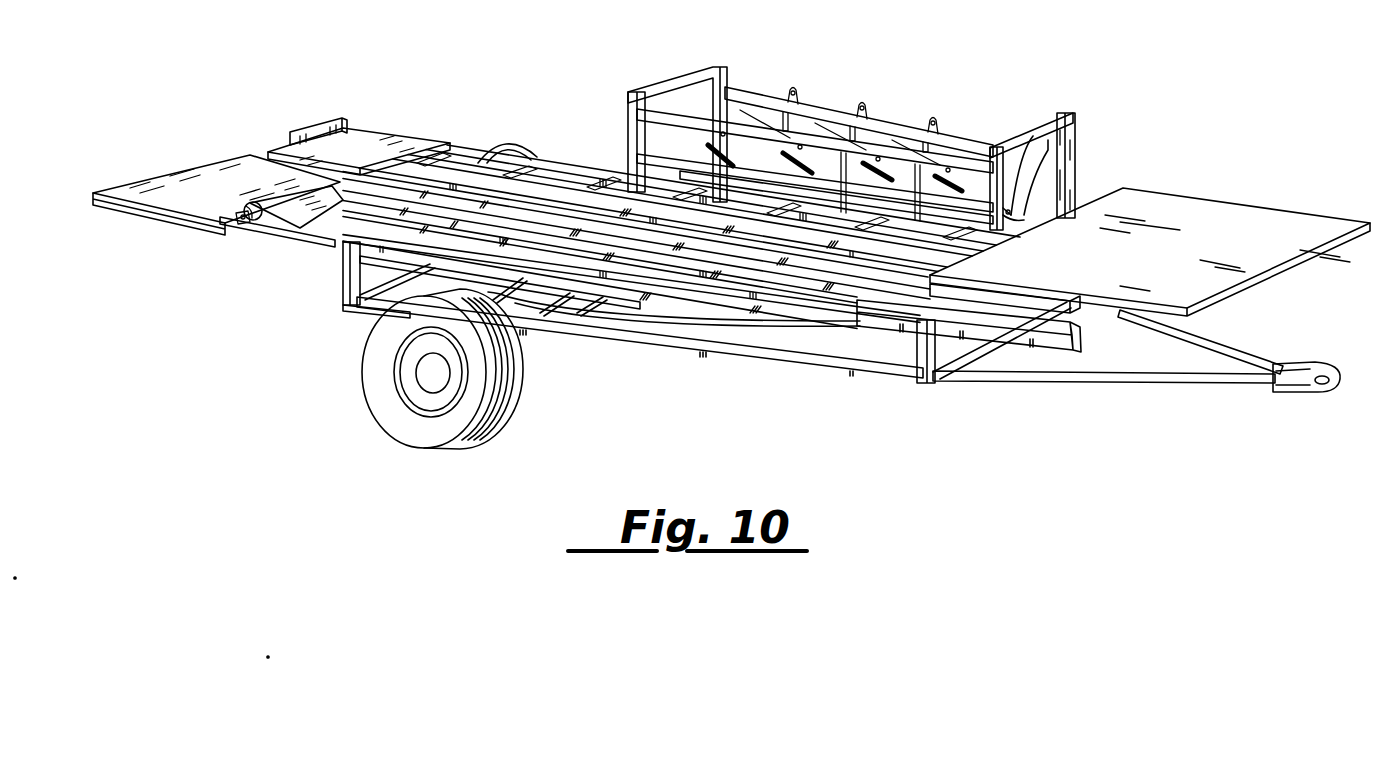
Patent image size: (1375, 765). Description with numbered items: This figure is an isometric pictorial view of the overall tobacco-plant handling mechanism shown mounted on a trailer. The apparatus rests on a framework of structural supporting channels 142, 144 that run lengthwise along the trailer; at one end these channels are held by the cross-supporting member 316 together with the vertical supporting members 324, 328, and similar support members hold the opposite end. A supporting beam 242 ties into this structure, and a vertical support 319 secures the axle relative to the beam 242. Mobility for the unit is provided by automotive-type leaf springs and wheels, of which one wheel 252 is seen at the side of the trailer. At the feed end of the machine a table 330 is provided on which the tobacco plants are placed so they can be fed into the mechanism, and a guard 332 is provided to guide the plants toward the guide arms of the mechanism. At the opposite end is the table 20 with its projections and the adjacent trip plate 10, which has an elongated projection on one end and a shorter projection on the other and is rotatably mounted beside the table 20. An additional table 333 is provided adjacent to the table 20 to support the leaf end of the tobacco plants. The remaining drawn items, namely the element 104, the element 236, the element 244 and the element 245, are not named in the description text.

The trip plate 10 is at (305, 130).
The table 20 is at (378, 130).
The roller 104 is at (254, 219).
The structural supporting channel 142 is at (663, 113).
The structural supporting channel 144 is at (753, 95).
The arched bracket 236 is at (505, 150).
The supporting beam 242 is at (966, 357).
The leaf spring 244 is at (570, 307).
The frame post 245 is at (373, 278).
The wheel 252 is at (412, 438).
The cross-supporting member 316 is at (1053, 127).
The vertical support 319 is at (916, 347).
The vertical supporting member 324 is at (1004, 208).
The vertical supporting member 328 is at (1075, 138).
The table 330 is at (1192, 197).
The guard 332 is at (1047, 173).
The additional table 333 is at (188, 172).